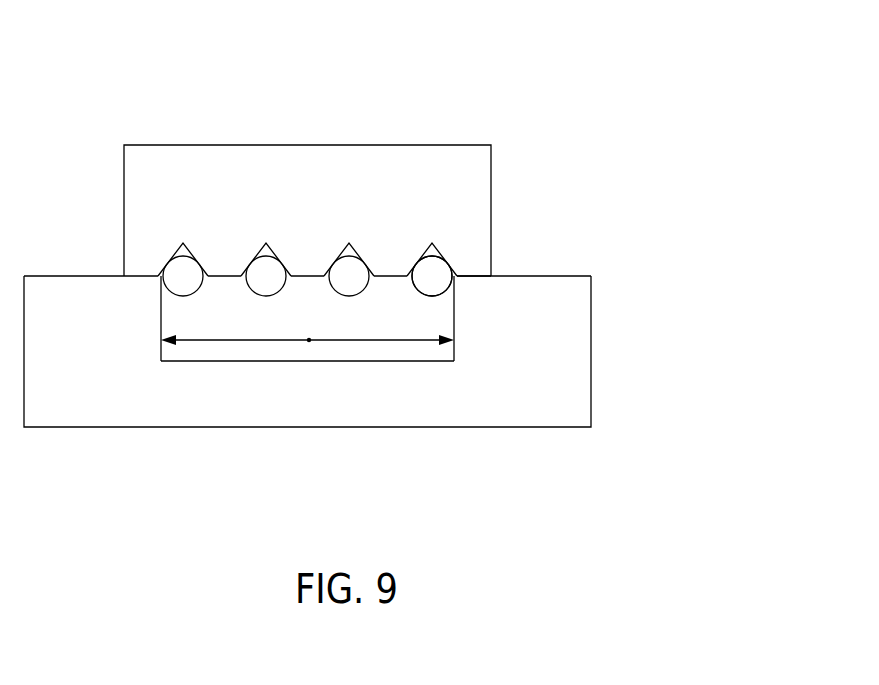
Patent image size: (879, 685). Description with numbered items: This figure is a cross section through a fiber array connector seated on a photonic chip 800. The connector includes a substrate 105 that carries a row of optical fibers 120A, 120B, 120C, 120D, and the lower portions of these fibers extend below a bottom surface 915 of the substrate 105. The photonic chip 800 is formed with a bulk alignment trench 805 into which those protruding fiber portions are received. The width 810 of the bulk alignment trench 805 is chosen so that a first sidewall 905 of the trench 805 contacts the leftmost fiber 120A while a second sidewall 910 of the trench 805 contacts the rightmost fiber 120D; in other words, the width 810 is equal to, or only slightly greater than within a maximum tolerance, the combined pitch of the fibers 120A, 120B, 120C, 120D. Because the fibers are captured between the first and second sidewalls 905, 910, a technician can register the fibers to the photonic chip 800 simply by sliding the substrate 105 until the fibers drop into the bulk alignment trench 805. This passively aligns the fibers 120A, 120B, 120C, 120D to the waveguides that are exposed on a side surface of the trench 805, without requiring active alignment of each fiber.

The substrate 105 is at (491, 231).
The leftmost fiber 120A is at (182, 277).
The fiber 120B is at (265, 277).
The fiber 120C is at (348, 277).
The rightmost fiber 120D is at (431, 277).
The photonic chip 800 is at (591, 378).
The bulk alignment trench 805 is at (454, 294).
The width 810 is at (309, 340).
The first sidewall 905 is at (150, 313).
The second sidewall 910 is at (466, 325).
The bottom surface 915 is at (471, 266).